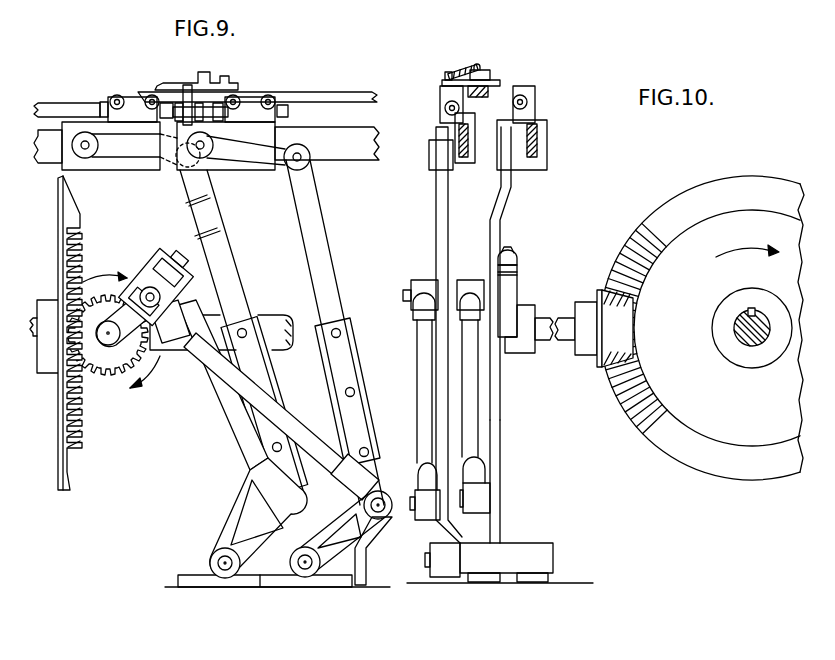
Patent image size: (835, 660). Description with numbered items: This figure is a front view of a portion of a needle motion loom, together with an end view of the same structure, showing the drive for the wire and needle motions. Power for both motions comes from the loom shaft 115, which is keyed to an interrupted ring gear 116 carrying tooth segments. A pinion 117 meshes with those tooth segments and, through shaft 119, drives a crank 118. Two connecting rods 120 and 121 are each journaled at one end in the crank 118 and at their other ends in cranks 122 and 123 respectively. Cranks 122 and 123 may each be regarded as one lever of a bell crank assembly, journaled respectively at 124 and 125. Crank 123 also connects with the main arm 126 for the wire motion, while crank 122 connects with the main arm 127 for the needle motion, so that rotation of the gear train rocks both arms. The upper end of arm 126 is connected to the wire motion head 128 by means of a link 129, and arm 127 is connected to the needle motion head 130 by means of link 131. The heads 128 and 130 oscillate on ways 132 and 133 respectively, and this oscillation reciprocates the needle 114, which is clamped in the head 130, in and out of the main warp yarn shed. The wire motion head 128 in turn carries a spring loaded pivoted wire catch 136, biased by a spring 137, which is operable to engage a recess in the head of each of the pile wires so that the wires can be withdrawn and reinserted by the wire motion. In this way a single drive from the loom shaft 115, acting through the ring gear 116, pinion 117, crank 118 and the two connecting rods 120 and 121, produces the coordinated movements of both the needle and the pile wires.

In FIG. 9, the needle 114 is at (51, 104).
In FIG. 10, the needle 114 is at (524, 102).
In FIG. 9, the loom shaft 115 is at (273, 317).
In FIG. 10, the loom shaft 115 is at (747, 348).
In FIG. 9, the interrupted ring gear 116 is at (80, 444).
In FIG. 10, the interrupted ring gear 116 is at (667, 452).
In FIG. 9, the pinion 117 is at (112, 378).
In FIG. 10, the pinion 117 is at (590, 305).
In FIG. 9, the crank 118 is at (153, 270).
In FIG. 10, the crank 118 is at (518, 262).
In FIG. 9, the shaft 119 is at (120, 342).
In FIG. 10, the shaft 119 is at (573, 341).
In FIG. 9, the connecting rod 120 is at (227, 407).
In FIG. 10, the connecting rod 120 is at (480, 411).
In FIG. 9, the connecting rod 121 is at (292, 418).
In FIG. 10, the connecting rod 121 is at (424, 372).
In FIG. 9, the crank 122 is at (261, 548).
In FIG. 10, the crank 122 is at (502, 509).
In FIG. 9, the crank 123 is at (360, 562).
In FIG. 10, the crank 123 is at (450, 573).
In FIG. 9, the journal 124 is at (223, 577).
In FIG. 9, the journal 125 is at (305, 577).
In FIG. 10, the journal 125 is at (430, 558).
In FIG. 9, the main arm 126 is at (330, 270).
In FIG. 10, the main arm 126 is at (438, 200).
In FIG. 9, the main arm 127 is at (230, 274).
In FIG. 10, the main arm 127 is at (503, 212).
In FIG. 9, the wire motion head 128 is at (258, 102).
In FIG. 10, the wire motion head 128 is at (446, 95).
In FIG. 9, the link 129 is at (250, 158).
In FIG. 10, the link 129 is at (433, 162).
In FIG. 9, the needle motion head 130 is at (135, 107).
In FIG. 10, the needle motion head 130 is at (527, 94).
In FIG. 9, the link 131 is at (123, 153).
In FIG. 10, the link 131 is at (517, 170).
In FIG. 10, the ways 132 is at (460, 128).
In FIG. 10, the ways 133 is at (532, 137).
In FIG. 9, the wire catch 136 is at (235, 82).
In FIG. 10, the wire catch 136 is at (485, 72).
In FIG. 10, the spring 137 is at (458, 67).